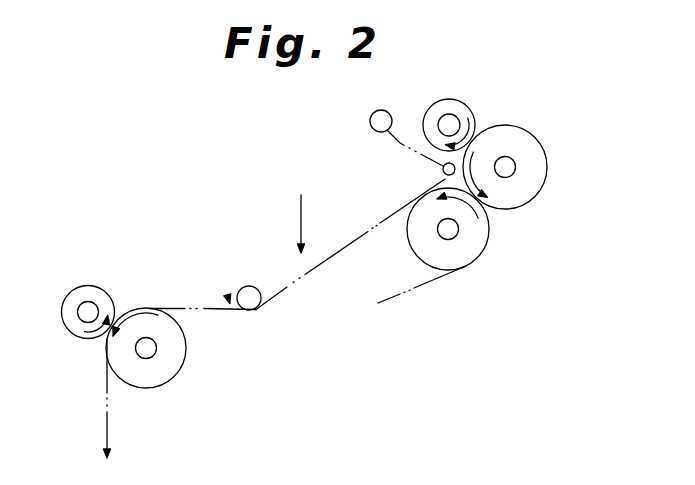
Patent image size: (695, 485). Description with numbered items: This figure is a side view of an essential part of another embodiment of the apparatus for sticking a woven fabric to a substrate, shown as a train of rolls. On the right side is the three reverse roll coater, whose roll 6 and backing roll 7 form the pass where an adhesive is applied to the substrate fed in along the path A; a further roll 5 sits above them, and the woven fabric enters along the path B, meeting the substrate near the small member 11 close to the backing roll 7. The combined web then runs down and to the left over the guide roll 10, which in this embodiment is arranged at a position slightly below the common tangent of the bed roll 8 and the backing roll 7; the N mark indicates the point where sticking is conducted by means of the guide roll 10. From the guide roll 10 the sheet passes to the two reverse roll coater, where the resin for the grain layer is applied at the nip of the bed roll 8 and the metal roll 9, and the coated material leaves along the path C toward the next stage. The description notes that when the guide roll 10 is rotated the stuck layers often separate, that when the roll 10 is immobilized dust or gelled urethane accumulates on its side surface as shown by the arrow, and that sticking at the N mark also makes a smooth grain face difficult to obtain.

The roller 5 is at (466, 104).
The roll 6 is at (544, 148).
The backing roll 7 is at (458, 256).
The bed roll 8 is at (152, 309).
The metal roll 9 is at (90, 288).
The guide roll 10 is at (250, 287).
The nip / guide member 11 is at (443, 171).
The web A is at (395, 300).
The web B is at (400, 143).
The combined web C is at (105, 421).
The N mark N is at (311, 217).